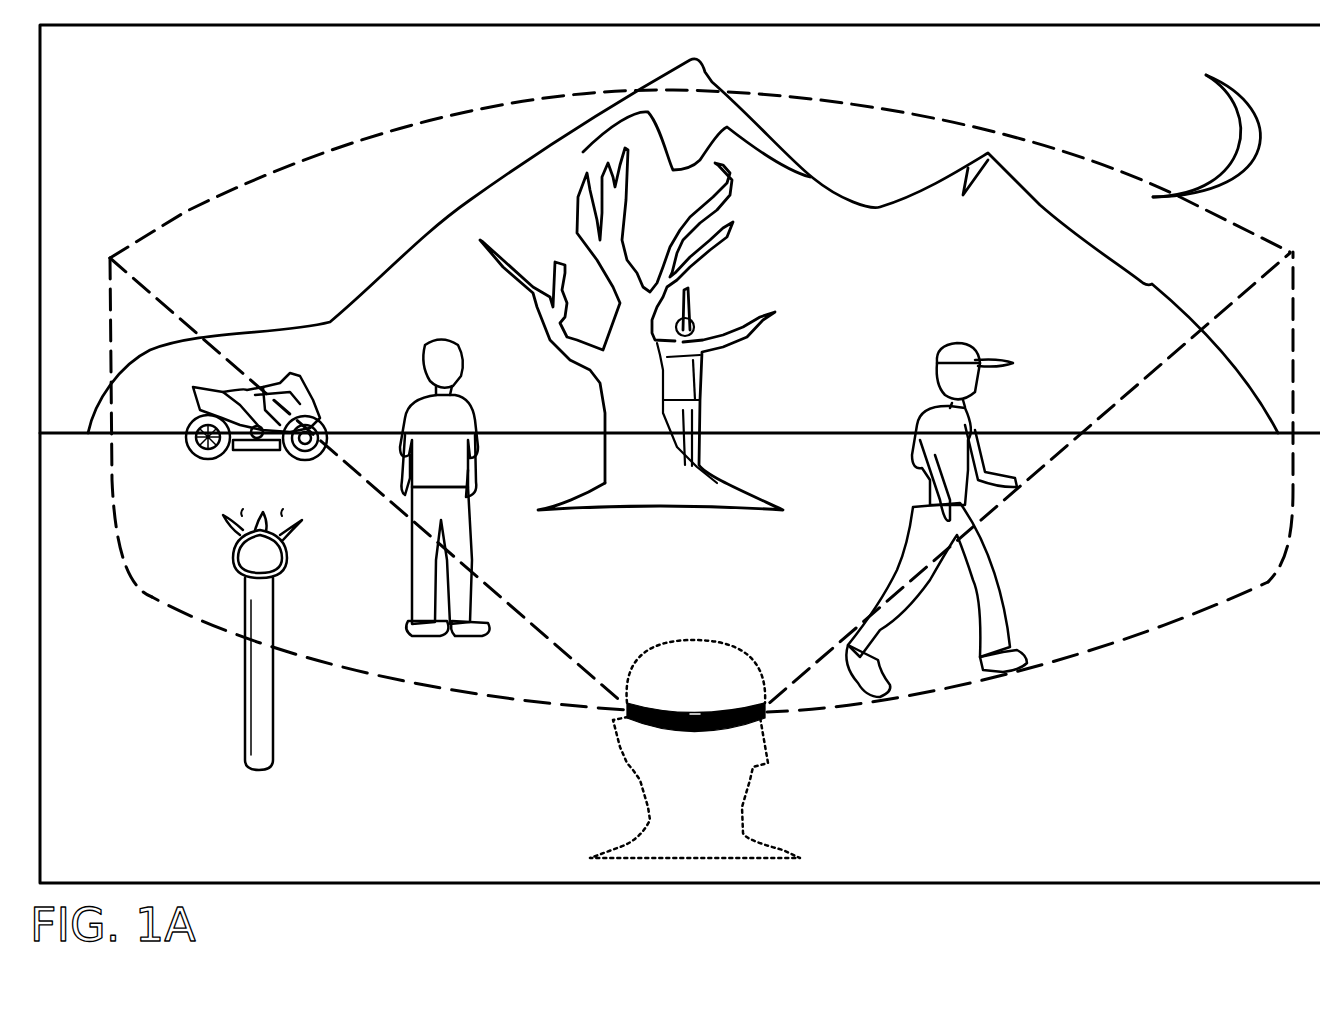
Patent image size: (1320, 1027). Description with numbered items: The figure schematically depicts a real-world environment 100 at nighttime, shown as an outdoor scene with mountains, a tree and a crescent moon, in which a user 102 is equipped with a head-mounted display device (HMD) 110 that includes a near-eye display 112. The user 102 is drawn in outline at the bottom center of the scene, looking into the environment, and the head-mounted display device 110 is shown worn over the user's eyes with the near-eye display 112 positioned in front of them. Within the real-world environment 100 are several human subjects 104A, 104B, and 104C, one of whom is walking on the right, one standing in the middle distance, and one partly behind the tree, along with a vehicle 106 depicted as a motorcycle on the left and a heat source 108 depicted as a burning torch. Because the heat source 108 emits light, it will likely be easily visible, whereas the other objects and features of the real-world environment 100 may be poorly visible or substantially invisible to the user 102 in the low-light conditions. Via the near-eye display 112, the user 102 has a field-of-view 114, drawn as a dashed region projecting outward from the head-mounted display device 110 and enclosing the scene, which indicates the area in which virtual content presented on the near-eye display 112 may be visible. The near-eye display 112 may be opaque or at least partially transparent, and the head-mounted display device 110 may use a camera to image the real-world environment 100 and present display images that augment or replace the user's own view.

The real-world environment 100 is at (162, 84).
The user 102 is at (712, 697).
The human subject 104A is at (1012, 333).
The human subject 104B is at (468, 510).
The human subject 104C is at (696, 378).
The vehicle 106 is at (293, 377).
The heat source 108 is at (232, 556).
The head-mounted display device 110 is at (797, 720).
The near-eye display 112 is at (627, 710).
The field-of-view 114 is at (185, 210).